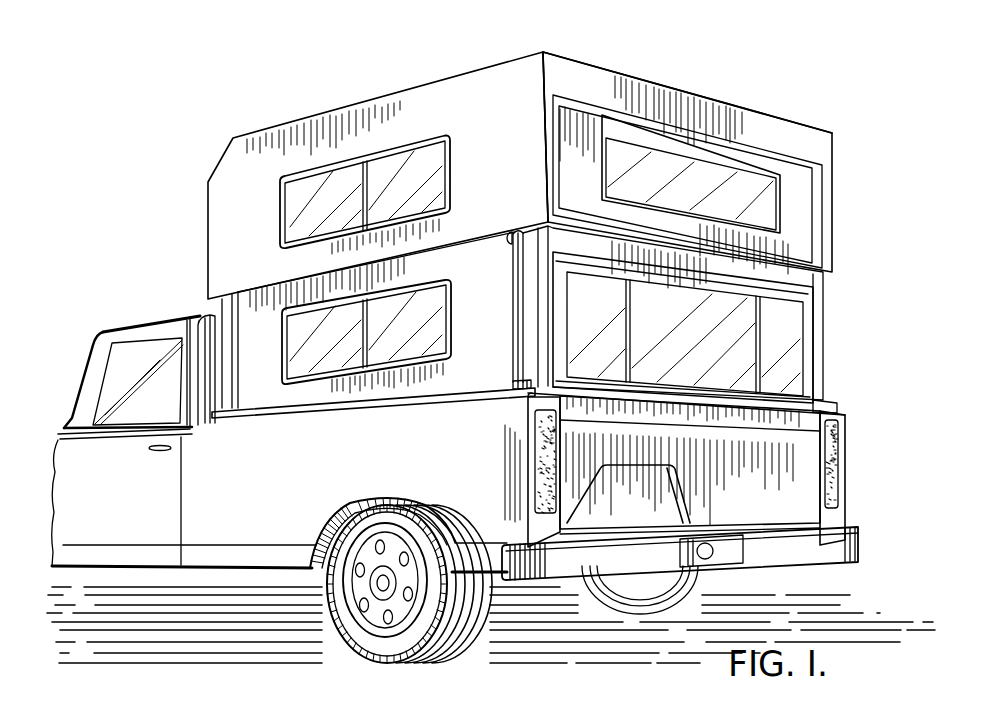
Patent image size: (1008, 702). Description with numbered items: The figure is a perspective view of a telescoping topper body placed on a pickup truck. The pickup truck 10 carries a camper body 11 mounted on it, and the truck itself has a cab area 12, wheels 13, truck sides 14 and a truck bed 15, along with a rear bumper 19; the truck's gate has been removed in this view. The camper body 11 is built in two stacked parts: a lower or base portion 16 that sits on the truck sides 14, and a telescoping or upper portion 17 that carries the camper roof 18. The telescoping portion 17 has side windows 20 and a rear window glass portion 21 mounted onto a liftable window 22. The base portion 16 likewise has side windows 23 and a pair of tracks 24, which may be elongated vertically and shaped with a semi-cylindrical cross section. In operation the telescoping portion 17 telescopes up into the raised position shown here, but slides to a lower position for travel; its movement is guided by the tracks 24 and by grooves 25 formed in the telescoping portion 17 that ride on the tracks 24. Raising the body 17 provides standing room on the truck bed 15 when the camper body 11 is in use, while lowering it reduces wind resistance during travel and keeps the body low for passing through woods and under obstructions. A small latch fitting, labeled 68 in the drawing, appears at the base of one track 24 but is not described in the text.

The pickup truck 10 is at (616, 63).
The camper body 11 is at (868, 240).
The cab area 12 is at (131, 557).
The wheels 13 is at (465, 611).
The truck sides 14 is at (810, 424).
The truck bed 15 is at (748, 527).
The base portion 16 is at (826, 372).
The telescoping portion 17 is at (470, 93).
The camper roof 18 is at (682, 94).
The rear bumper 19 is at (580, 566).
The side windows 20 is at (293, 208).
The rear window glass portion 21 is at (767, 210).
The liftable window 22 is at (803, 194).
The side windows 23 is at (333, 358).
The tracks 24 is at (515, 340).
The grooves 25 is at (516, 234).
The latch 68 is at (516, 386).